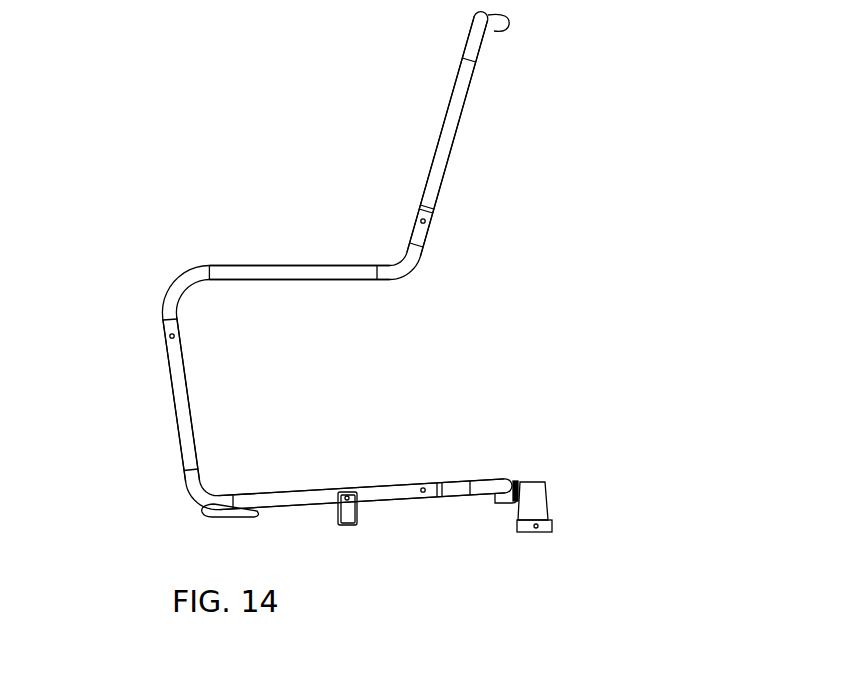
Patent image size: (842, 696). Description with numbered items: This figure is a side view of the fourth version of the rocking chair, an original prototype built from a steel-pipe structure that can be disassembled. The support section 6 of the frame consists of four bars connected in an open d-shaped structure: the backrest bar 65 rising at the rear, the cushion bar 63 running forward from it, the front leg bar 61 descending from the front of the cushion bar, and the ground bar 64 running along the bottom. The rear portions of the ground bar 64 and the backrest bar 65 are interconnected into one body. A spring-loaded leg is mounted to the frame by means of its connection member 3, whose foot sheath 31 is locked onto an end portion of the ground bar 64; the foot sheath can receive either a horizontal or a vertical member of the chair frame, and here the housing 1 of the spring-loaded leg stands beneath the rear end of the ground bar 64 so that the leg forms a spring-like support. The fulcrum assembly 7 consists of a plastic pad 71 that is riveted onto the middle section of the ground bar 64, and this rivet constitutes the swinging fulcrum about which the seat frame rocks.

The housing 1 is at (564, 488).
The connection member 3 is at (490, 528).
The foot sheath 31 is at (553, 460).
The support section 6 is at (299, 264).
The front leg bar 61 is at (213, 399).
The cushion bar 63 is at (299, 242).
The ground bar 64 is at (361, 467).
The backrest bar 65 is at (421, 136).
The fulcrum assembly 7 is at (373, 539).
The plastic pad 71 is at (384, 524).